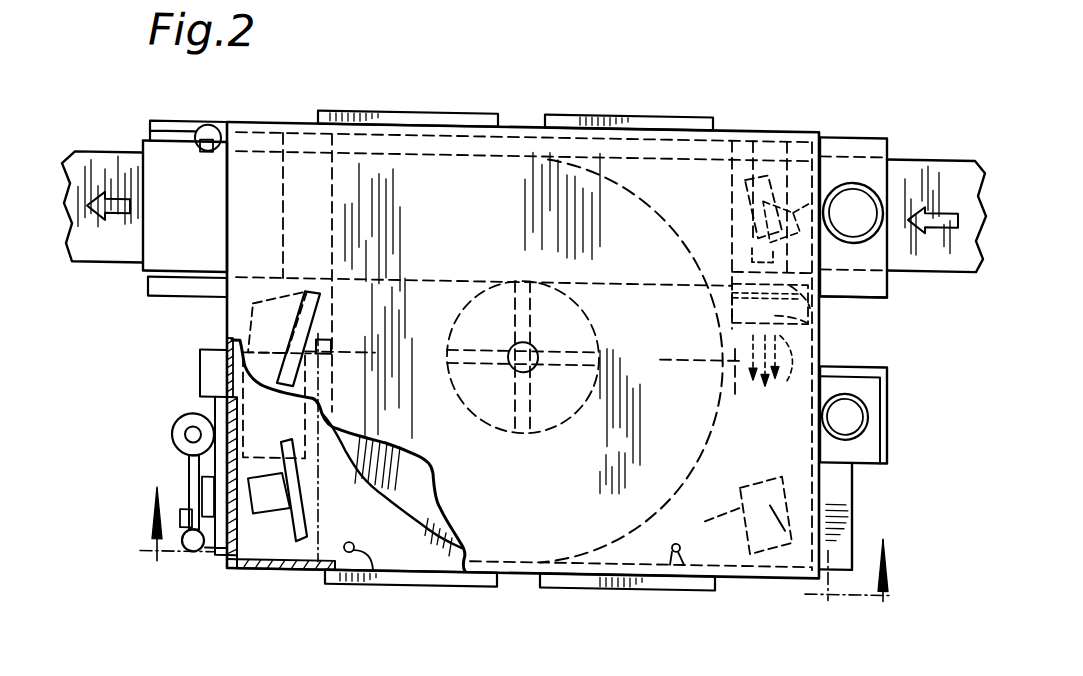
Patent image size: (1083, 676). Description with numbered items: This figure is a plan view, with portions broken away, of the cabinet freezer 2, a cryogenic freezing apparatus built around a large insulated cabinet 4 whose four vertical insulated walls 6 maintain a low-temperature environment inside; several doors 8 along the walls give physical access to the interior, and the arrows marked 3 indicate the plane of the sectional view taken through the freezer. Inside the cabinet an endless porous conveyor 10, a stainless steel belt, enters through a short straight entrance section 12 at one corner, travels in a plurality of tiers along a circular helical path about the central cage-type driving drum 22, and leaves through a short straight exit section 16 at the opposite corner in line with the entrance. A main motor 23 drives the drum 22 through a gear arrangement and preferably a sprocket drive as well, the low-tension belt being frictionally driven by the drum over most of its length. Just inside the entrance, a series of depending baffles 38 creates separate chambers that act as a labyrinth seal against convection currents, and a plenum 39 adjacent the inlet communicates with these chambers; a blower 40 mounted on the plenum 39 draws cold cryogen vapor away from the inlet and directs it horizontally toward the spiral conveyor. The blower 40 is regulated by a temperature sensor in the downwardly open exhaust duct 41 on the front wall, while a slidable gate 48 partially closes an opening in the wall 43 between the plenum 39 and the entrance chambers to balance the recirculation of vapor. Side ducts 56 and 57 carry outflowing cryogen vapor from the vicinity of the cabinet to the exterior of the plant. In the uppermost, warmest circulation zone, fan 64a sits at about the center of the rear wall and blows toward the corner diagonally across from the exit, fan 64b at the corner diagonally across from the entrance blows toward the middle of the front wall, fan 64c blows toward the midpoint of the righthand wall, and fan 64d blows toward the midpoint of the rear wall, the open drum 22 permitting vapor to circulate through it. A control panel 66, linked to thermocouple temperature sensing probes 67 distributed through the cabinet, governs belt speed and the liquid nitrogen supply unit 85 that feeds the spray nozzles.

The cabinet freezer 2 is at (748, 80).
The section line 3- 3 is at (506, 563).
The insulated cabinet 4 is at (290, 102).
The vertical insulated walls 6 is at (225, 306).
The doors 8 is at (486, 109).
The endless porous conveyor 10 is at (548, 152).
The entrance section 12 is at (726, 125).
The exit section 16 is at (315, 148).
The central cage-type driving drum 22 is at (573, 330).
The main motor 23 is at (868, 402).
The baffles 38 is at (800, 125).
The plenum 39 is at (823, 316).
The blower 40 is at (770, 375).
The exhaust duct 41 is at (888, 130).
The wall 43 is at (797, 304).
The slidable gate 48 is at (888, 286).
The side duct 56 is at (160, 284).
The side duct 57 is at (205, 102).
The fan 64a is at (235, 322).
The fan 64b is at (265, 503).
The fan 64c is at (795, 511).
The fan 64d is at (826, 139).
The control panel 66 is at (838, 471).
The thermocouple temperature sensing probes 67 is at (360, 570).
The liquid nitrogen supply unit 85 is at (187, 470).